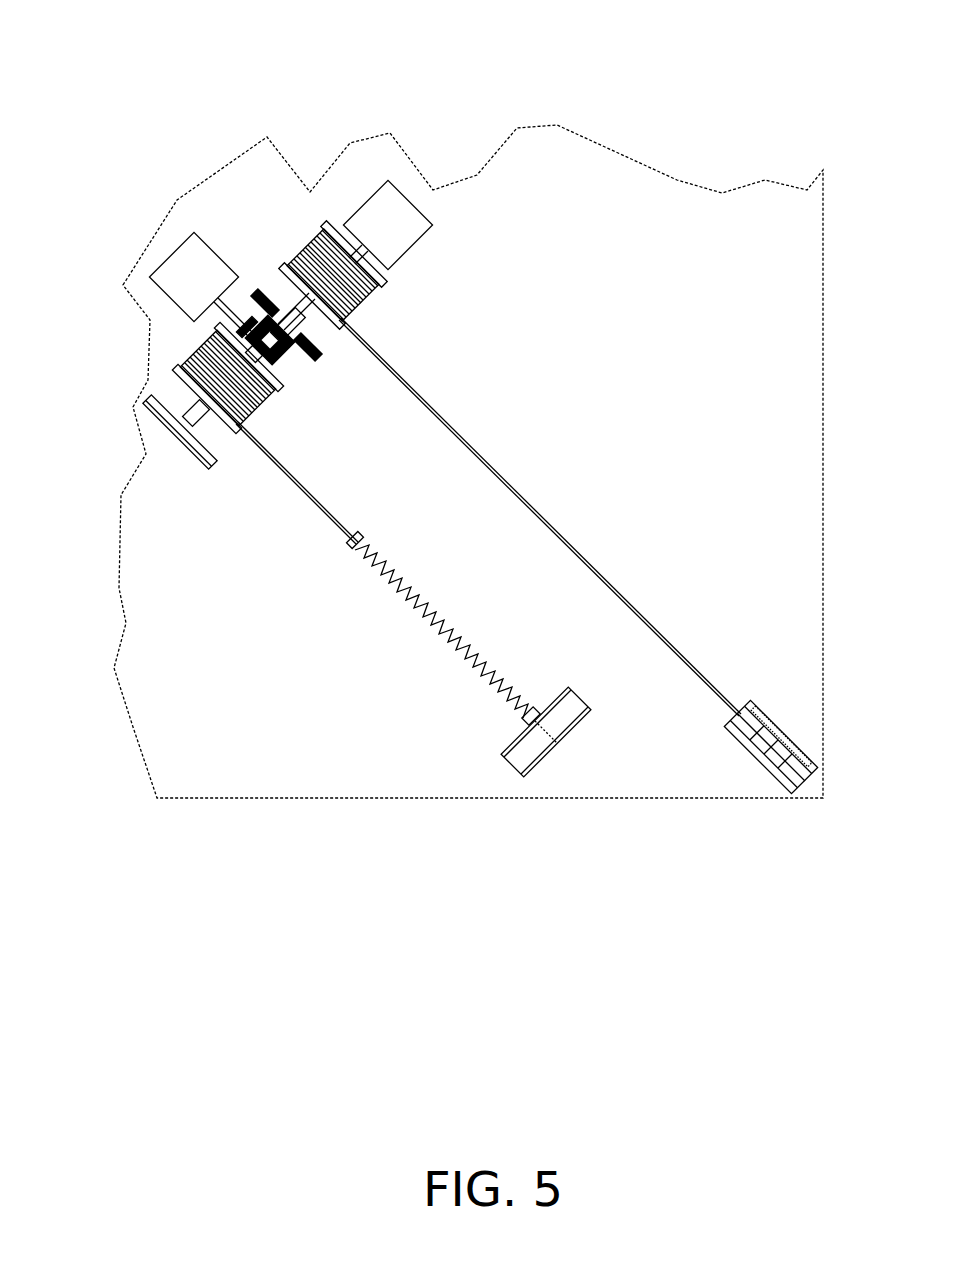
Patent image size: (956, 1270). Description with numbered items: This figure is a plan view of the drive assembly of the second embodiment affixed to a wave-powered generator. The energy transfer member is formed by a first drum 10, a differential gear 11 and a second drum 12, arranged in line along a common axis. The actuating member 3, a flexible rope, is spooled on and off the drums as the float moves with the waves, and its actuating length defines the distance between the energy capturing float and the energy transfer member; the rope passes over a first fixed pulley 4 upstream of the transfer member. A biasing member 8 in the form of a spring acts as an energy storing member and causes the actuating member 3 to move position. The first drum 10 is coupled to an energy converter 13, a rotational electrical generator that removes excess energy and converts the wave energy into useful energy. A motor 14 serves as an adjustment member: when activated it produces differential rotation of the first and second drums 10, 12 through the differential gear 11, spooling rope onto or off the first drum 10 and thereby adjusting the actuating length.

The actuating member 3 is at (486, 456).
The first fixed pulley 4 is at (780, 715).
The biasing member 8 is at (391, 595).
The first drum 10 is at (323, 278).
The differential gear 11 is at (272, 340).
The second drum 12 is at (178, 413).
The energy converter 13 is at (393, 225).
The motor 14 is at (180, 282).